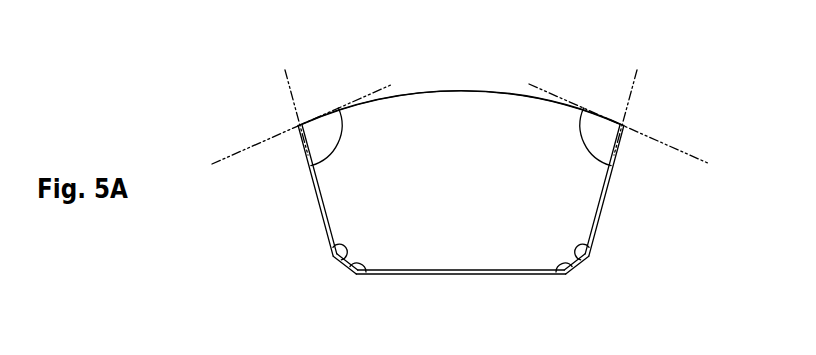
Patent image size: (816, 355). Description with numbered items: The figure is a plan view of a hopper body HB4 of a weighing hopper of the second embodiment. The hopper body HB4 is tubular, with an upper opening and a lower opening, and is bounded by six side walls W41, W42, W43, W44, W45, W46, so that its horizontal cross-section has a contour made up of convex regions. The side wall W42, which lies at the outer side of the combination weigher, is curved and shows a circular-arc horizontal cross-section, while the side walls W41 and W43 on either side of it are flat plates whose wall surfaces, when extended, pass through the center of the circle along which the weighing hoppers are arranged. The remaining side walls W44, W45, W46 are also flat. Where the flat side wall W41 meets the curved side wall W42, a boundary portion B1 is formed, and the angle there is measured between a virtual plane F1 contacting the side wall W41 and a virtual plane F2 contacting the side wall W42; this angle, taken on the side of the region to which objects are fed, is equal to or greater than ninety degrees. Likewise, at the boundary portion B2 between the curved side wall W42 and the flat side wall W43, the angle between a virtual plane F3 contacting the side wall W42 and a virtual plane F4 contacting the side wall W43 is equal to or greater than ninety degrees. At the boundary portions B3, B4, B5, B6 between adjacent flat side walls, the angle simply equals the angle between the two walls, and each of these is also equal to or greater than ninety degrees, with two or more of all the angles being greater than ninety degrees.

The hopper body HB4 is at (425, 91).
The side wall W41 is at (606, 192).
The side wall W42 is at (462, 90).
The side wall W43 is at (313, 188).
The side wall W44 is at (341, 267).
The side wall W45 is at (460, 277).
The side wall W46 is at (583, 273).
The boundary portion B1 is at (624, 125).
The boundary portion B2 is at (300, 125).
The boundary portion B3 is at (333, 257).
The boundary portion B4 is at (355, 277).
The boundary portion B5 is at (567, 277).
The boundary portion B6 is at (589, 255).
The virtual plane F1 is at (630, 86).
The virtual plane F2 is at (678, 150).
The virtual plane F3 is at (252, 146).
The virtual plane F4 is at (292, 89).